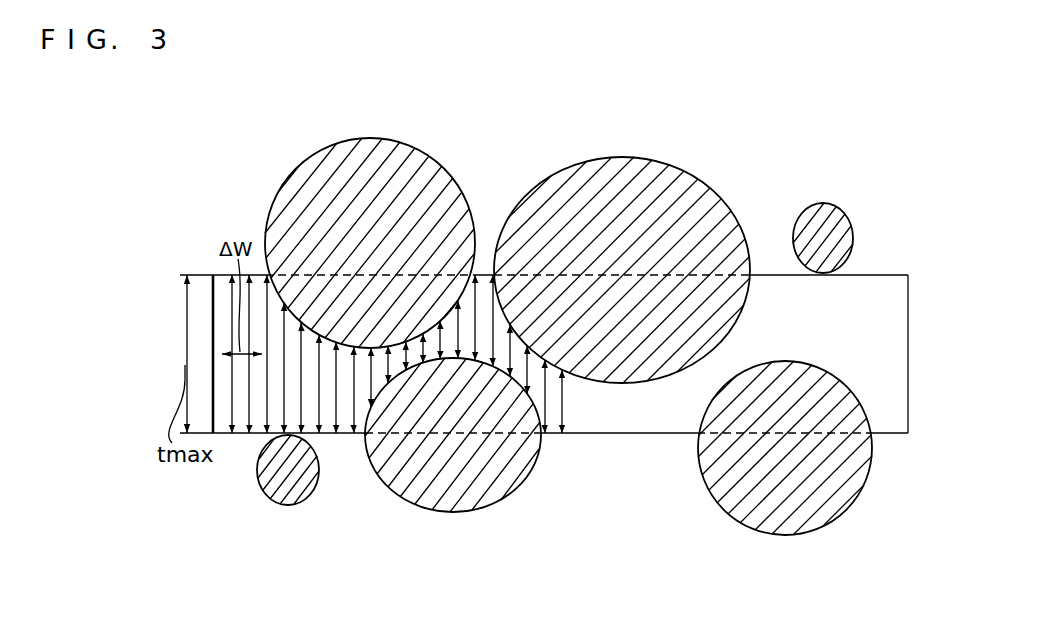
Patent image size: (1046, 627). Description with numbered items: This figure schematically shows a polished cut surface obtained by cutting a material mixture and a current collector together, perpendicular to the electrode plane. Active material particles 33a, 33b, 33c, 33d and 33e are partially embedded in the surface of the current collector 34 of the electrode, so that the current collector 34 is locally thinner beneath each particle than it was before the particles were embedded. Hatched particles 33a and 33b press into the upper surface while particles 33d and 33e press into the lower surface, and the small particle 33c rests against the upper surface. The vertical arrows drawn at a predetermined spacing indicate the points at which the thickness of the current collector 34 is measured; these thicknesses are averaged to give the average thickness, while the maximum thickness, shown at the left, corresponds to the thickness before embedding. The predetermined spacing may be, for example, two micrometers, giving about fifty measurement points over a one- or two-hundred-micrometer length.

The active material particle 33a is at (360, 153).
The active material particle 33b is at (601, 178).
The active material particle 33c is at (838, 222).
The active material particle 33d is at (467, 490).
The active material particle 33e is at (790, 518).
The current collector 34 is at (890, 368).